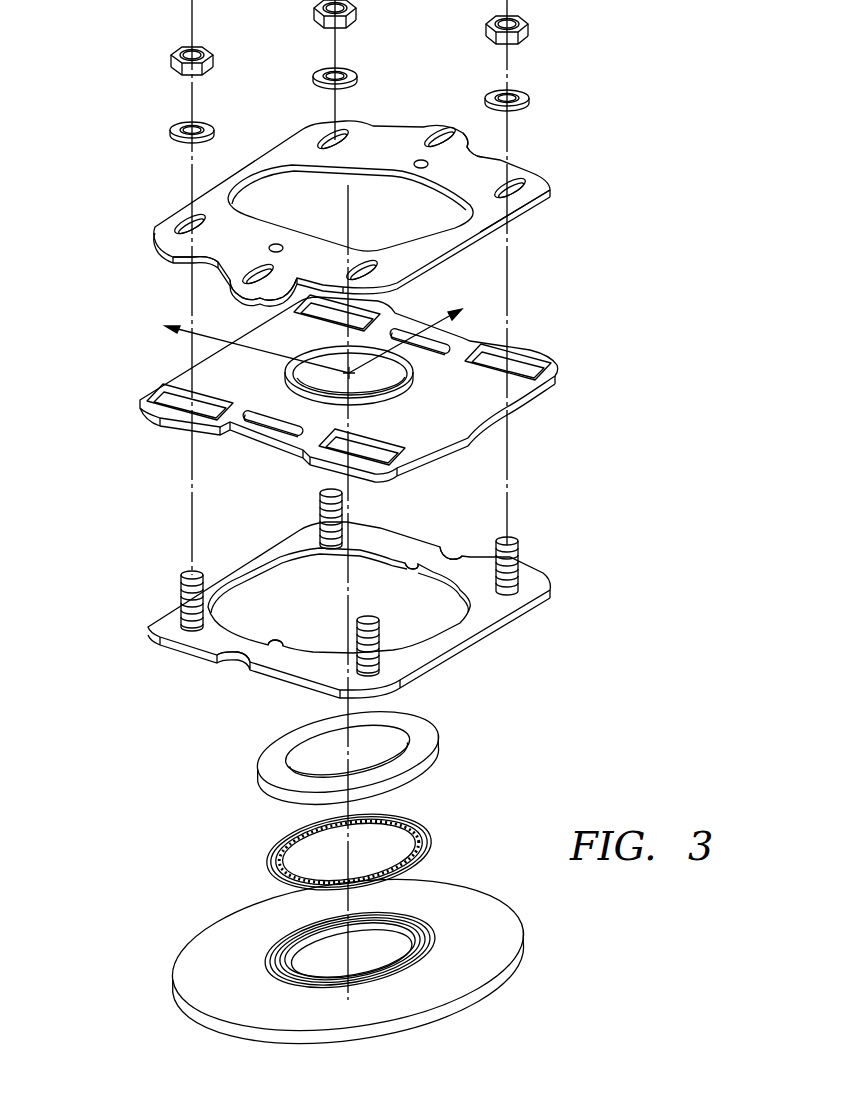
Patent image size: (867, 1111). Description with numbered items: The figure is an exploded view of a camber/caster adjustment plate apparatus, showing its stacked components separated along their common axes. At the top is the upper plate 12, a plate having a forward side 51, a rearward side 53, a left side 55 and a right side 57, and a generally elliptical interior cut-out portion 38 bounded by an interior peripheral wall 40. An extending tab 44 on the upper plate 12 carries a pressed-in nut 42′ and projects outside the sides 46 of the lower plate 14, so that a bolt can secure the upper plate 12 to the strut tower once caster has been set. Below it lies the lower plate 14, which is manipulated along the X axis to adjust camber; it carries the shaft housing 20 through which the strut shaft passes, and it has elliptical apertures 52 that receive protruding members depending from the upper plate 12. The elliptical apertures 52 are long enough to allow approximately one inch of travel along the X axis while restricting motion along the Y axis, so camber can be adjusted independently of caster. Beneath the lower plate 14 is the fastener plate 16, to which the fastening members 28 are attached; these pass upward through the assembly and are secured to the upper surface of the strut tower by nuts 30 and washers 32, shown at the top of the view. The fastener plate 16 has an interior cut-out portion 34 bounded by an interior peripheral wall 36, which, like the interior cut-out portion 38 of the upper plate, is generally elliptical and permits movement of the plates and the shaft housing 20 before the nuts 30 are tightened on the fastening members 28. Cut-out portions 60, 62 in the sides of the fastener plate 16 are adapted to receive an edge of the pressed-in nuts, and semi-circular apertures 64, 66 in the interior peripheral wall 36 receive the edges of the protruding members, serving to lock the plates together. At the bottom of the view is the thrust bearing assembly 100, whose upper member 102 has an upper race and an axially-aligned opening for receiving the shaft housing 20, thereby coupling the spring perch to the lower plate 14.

The upper plate 12 is at (312, 184).
The lower plate 14 is at (310, 398).
The fastener plate 16 is at (323, 605).
The shaft housing 20 is at (292, 373).
The fastening members 28 is at (518, 553).
The nuts 30 is at (526, 33).
The washers 32 is at (527, 107).
The interior cut-out portion 34 is at (339, 600).
The interior peripheral wall 36 is at (378, 553).
The interior cut-out portion 38 is at (350, 208).
The interior peripheral wall 40 is at (380, 170).
The pressed-in nut 42′ is at (238, 303).
The extending tab 44 is at (450, 127).
The sides 46 is at (463, 337).
The forward side 51 is at (250, 165).
The elliptical aperture 52 is at (418, 352).
The rearward side 53 is at (480, 245).
The left side 55 is at (197, 258).
The right side 57 is at (483, 147).
The cut-out portion 60 is at (223, 660).
The cut-out portion 62 is at (450, 558).
The semi-circular aperture 64 is at (275, 642).
The semi-circular aperture 66 is at (410, 572).
The thrust bearing assembly 100 is at (222, 860).
The upper member 102 is at (262, 748).